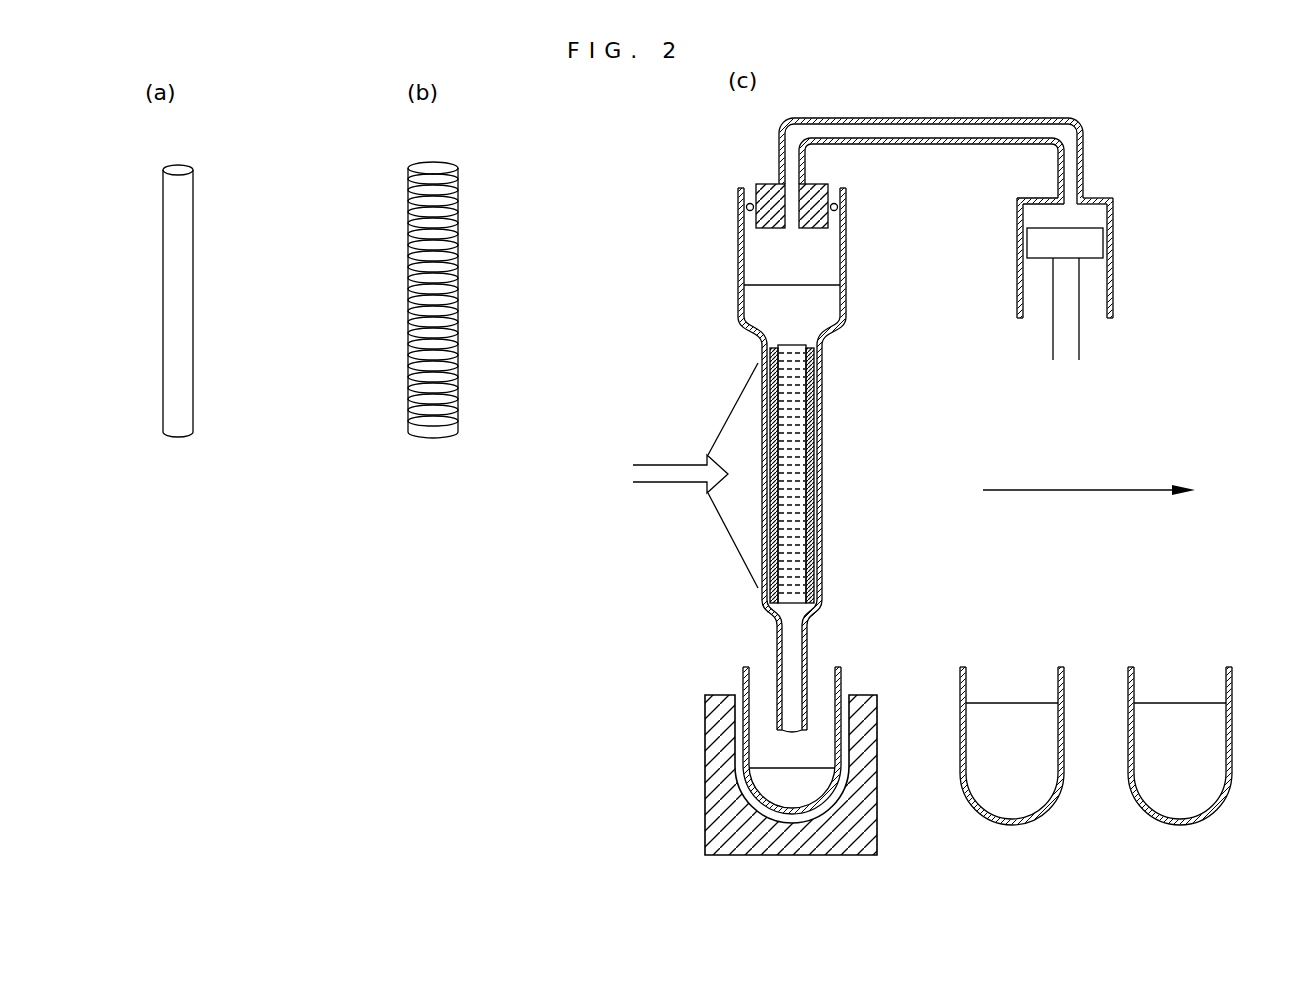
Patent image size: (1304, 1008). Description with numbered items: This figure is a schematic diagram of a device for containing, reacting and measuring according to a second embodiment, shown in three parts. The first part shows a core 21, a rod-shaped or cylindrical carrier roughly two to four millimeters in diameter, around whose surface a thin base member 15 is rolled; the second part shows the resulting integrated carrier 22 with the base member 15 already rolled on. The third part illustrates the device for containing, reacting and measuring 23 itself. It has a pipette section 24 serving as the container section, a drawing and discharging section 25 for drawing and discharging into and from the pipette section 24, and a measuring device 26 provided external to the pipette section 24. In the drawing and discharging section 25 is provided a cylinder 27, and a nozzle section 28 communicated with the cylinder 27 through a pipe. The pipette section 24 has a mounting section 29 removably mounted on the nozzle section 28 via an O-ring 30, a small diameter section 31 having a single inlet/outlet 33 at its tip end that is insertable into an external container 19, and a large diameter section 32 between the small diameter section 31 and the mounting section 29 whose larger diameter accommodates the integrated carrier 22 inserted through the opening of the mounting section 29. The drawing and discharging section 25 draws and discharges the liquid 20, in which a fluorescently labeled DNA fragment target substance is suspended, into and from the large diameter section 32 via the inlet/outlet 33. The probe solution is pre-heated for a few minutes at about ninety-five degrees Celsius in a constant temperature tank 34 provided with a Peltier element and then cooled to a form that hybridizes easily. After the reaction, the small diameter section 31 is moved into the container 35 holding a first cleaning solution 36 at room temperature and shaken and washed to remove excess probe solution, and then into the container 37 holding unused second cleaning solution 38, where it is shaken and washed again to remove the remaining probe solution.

The base member 15 is at (455, 193).
The container 19 is at (742, 670).
The liquid 20 is at (810, 790).
The core 21 is at (167, 218).
The integrated carrier 22 is at (378, 155).
The device for containing, reacting and measuring 23 is at (885, 106).
The pipette section 24 is at (830, 391).
The drawing and discharging section 25 is at (1084, 115).
The measuring device 26 is at (660, 465).
The cylinder 27 is at (1113, 243).
The nozzle section 28 is at (762, 186).
The mounting section 29 is at (757, 250).
The O-ring 30 is at (836, 196).
The small diameter section 31 is at (810, 640).
The large diameter section 32 is at (823, 437).
The inlet/outlet 33 is at (790, 730).
The constant temperature tank 34 is at (718, 813).
The container 35 is at (1053, 805).
The first cleaning solution 36 is at (998, 716).
The container 37 is at (1215, 808).
The second cleaning solution 38 is at (1173, 720).